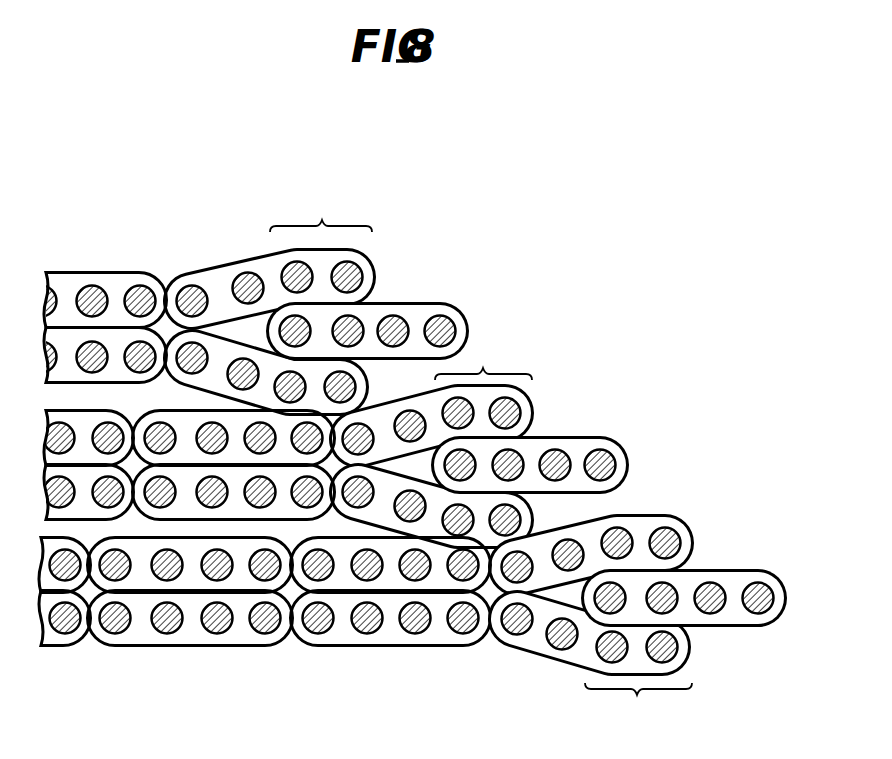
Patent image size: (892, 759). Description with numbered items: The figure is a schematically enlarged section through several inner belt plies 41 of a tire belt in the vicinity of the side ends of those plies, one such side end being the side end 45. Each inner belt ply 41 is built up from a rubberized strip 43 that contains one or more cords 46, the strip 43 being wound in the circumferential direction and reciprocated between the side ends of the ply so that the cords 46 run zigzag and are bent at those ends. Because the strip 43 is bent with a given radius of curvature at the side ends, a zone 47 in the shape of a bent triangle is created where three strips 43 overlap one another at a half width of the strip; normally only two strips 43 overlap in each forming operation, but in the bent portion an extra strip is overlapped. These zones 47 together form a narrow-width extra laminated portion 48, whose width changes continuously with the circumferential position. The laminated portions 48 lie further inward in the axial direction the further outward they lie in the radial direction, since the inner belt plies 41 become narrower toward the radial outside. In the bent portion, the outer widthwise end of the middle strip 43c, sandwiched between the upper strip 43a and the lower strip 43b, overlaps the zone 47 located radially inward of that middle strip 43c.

The inner belt ply 41 is at (231, 251).
The rubberized strip 43 is at (187, 285).
The upper strip 43a is at (533, 406).
The lower strip 43b is at (535, 514).
The middle strip 43c is at (620, 443).
The side end of the ply 45 is at (786, 590).
The cord 46 is at (93, 288).
The zone of a bent triangle 47 is at (481, 456).
The extra laminated portion 48 is at (380, 258).